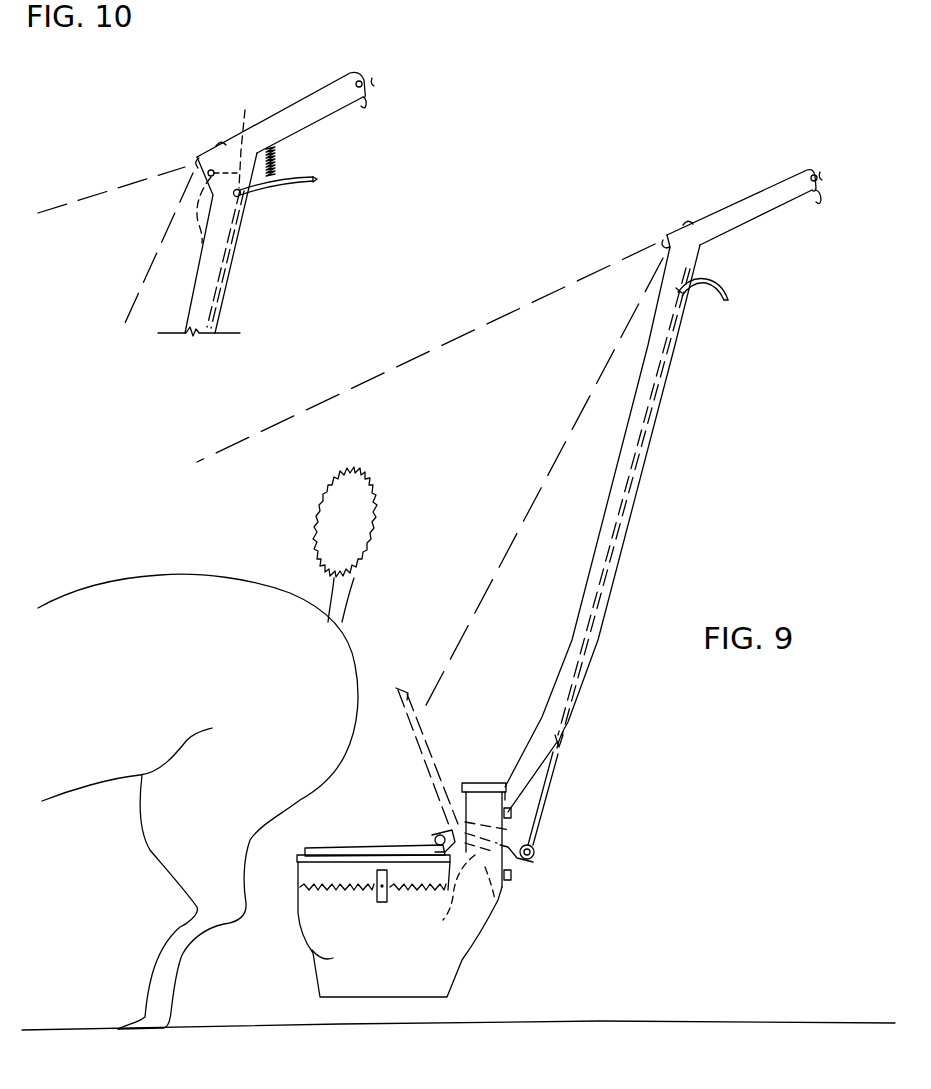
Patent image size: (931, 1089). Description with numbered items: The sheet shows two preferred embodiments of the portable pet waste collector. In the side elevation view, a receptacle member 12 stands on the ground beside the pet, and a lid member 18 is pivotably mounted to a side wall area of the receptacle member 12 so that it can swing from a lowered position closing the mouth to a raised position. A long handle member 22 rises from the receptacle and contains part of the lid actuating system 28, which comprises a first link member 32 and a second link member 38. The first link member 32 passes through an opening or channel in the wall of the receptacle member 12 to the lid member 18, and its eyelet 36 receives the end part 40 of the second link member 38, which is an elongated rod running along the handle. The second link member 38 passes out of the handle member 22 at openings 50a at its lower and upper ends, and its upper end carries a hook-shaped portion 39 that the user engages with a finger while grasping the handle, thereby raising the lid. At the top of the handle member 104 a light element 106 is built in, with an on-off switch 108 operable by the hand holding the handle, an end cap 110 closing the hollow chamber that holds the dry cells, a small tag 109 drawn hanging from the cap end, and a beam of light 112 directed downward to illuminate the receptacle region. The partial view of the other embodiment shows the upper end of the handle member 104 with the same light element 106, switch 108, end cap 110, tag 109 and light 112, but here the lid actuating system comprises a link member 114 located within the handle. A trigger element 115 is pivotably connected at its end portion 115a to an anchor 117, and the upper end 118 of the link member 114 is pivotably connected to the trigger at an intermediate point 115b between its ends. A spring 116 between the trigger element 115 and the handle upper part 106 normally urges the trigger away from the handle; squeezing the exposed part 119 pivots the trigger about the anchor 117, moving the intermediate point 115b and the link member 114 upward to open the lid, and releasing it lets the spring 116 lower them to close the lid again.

In FIG. 9, the receptacle member 12 is at (437, 933).
In FIG. 9, the lid member 18 is at (433, 757).
In FIG. 9, the handle member 22 is at (635, 508).
In FIG. 9, the lid actuating system 28 is at (600, 593).
In FIG. 9, the first link member 32 is at (504, 899).
In FIG. 9, the eyelet 36 is at (534, 857).
In FIG. 9, the second link member 38 is at (553, 782).
In FIG. 9, the hook-shaped portion 39 is at (728, 283).
In FIG. 9, the end part 40 is at (530, 843).
In FIG. 9, the openings 50a is at (688, 295).
In FIG. 10, the handle member 104 is at (245, 224).
In FIG. 9, the handle member 104 is at (658, 408).
In FIG. 10, the light element 106 is at (291, 125).
In FIG. 9, the light element 106 is at (735, 220).
In FIG. 10, the on-off switch 108 is at (220, 143).
In FIG. 9, the on-off switch 108 is at (688, 222).
In FIG. 10, the tag 109 is at (370, 100).
In FIG. 9, the tag 109 is at (822, 200).
In FIG. 10, the end cap 110 is at (374, 80).
In FIG. 9, the end cap 110 is at (853, 138).
In FIG. 10, the light 112 is at (78, 207).
In FIG. 9, the light 112 is at (443, 373).
In FIG. 10, the link member 114 is at (213, 302).
In FIG. 9, the link member 114 is at (643, 453).
In FIG. 10, the trigger element 115 is at (294, 179).
In FIG. 10, the end portion 115a is at (187, 219).
In FIG. 10, the intermediate point 115b is at (241, 141).
In FIG. 10, the spring 116 is at (275, 150).
In FIG. 10, the anchor 117 is at (200, 157).
In FIG. 10, the upper end 118 is at (242, 196).
In FIG. 10, the exposed part 119 is at (318, 178).